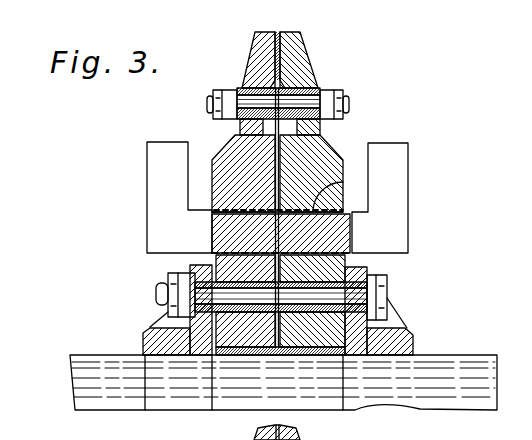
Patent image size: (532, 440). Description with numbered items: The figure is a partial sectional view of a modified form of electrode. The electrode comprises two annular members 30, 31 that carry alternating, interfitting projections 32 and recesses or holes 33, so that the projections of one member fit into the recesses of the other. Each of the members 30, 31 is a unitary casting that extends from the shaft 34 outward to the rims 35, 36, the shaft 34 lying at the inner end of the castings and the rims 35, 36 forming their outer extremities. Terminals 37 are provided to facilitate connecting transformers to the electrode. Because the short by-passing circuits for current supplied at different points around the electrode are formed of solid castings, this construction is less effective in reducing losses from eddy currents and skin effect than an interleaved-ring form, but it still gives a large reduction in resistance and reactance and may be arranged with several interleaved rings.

The annular member 30 is at (234, 152).
The annular member 31 is at (325, 156).
The projection 32 is at (340, 232).
The recess or hole 33 is at (343, 181).
The shaft 34 is at (95, 360).
The rim 35 is at (258, 47).
The rim 36 is at (304, 52).
The terminal 37 is at (157, 204).